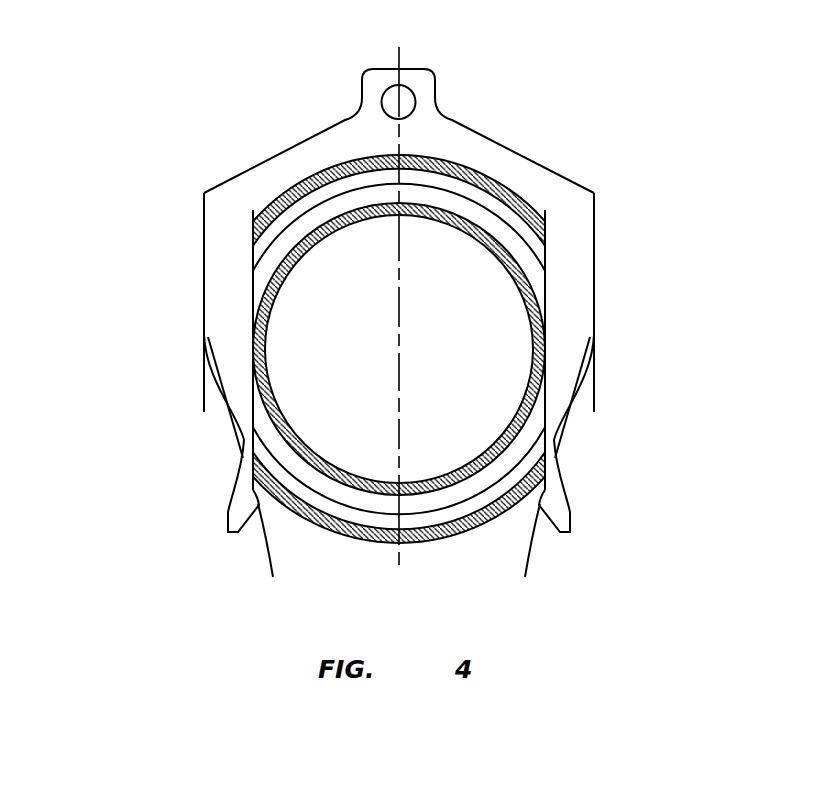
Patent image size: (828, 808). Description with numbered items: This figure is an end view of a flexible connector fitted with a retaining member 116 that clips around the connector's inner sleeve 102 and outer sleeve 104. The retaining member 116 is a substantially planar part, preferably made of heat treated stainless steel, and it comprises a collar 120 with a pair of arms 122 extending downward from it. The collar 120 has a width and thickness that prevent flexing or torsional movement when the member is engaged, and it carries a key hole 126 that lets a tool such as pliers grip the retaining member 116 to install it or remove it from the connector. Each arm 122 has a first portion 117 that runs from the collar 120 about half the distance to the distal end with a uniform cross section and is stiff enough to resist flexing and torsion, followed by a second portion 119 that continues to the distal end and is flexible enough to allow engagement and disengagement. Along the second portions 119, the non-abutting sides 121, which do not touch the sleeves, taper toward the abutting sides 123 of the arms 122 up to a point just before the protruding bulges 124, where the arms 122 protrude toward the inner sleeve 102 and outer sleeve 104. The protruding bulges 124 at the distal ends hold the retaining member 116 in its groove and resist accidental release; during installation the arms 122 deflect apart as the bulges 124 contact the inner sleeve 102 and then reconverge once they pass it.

The inner sleeve 102 is at (533, 383).
The outer sleeve 104 is at (594, 358).
The retaining member 116 is at (598, 189).
The first portions 117 is at (594, 273).
The second portions 119 is at (560, 408).
The collar 120 is at (502, 141).
The non-abutting sides 121 is at (567, 377).
The arms 122 is at (562, 504).
The abutting sides 123 is at (542, 289).
The protruding bulge 124 is at (400, 557).
The key hole 126 is at (410, 100).